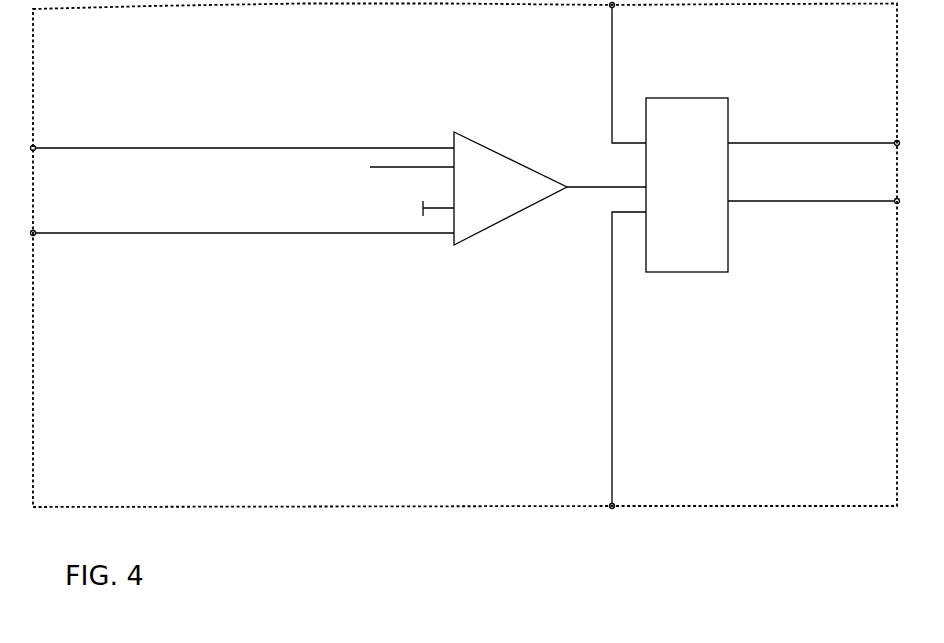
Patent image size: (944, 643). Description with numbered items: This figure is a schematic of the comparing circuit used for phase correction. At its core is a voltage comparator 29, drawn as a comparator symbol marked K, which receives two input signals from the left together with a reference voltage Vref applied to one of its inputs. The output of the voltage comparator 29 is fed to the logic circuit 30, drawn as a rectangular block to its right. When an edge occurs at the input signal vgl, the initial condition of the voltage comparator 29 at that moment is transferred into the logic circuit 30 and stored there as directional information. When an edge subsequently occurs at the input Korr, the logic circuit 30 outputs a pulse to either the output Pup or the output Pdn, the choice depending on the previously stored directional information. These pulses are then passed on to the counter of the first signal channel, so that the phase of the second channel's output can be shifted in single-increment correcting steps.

The voltage comparator 29 is at (492, 207).
The logic circuit 30 is at (698, 255).
The input korr Korr is at (616, 75).
The input signal vgl is at (617, 358).
The reference voltage input Vref is at (412, 180).
The output Pup is at (811, 134).
The output Pdn is at (811, 189).